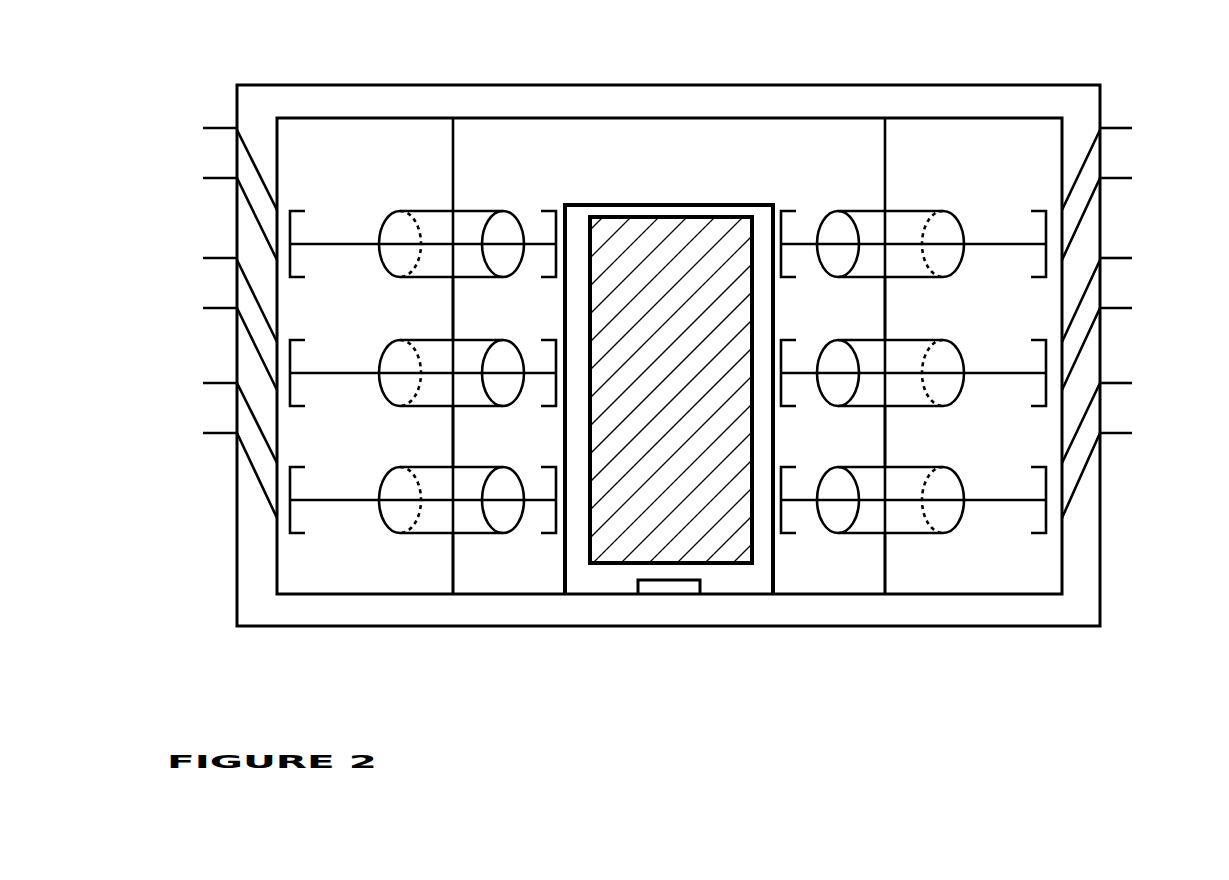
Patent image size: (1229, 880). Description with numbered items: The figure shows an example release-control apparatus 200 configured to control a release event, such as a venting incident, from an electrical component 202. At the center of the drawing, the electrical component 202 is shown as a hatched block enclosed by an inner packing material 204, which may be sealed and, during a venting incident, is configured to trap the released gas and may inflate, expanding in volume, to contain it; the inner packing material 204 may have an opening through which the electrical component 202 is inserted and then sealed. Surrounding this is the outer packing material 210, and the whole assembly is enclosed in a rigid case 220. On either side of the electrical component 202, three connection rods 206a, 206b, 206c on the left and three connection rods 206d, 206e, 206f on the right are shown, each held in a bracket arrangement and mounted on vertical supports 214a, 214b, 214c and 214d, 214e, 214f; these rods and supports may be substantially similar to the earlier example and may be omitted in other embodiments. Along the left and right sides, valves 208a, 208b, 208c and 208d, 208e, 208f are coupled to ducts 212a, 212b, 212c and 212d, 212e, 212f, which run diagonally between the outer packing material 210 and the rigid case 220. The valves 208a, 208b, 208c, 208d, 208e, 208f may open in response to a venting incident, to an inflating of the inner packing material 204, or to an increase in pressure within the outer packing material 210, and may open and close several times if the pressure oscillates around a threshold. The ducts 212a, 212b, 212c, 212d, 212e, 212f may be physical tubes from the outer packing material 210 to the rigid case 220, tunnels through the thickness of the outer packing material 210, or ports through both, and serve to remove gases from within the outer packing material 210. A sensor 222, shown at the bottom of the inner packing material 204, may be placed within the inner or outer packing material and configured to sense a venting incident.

The release-control apparatus 200 is at (196, 81).
The electrical component 202 is at (683, 217).
The inner packing material 204 is at (607, 205).
The connection rod 206a is at (312, 242).
The connection rod 206b is at (312, 371).
The connection rod 206c is at (312, 498).
The connection rod 206d is at (1028, 240).
The connection rod 206e is at (1028, 369).
The connection rod 206f is at (1028, 496).
The valve 208a is at (222, 126).
The valve 208b is at (222, 256).
The valve 208c is at (222, 380).
The valve 208d is at (1115, 126).
The valve 208e is at (1115, 256).
The valve 208f is at (1115, 380).
The outer packing material 210 is at (845, 118).
The duct 212a is at (282, 210).
The duct 212b is at (282, 340).
The duct 212c is at (282, 462).
The duct 212d is at (1058, 208).
The duct 212e is at (1058, 340).
The duct 212f is at (1058, 462).
The support 214a is at (457, 282).
The support 214b is at (457, 411).
The support 214c is at (457, 538).
The support 214d is at (880, 282).
The support 214e is at (880, 411).
The support 214f is at (880, 538).
The rigid case 220 is at (618, 85).
The sensor 222 is at (668, 596).